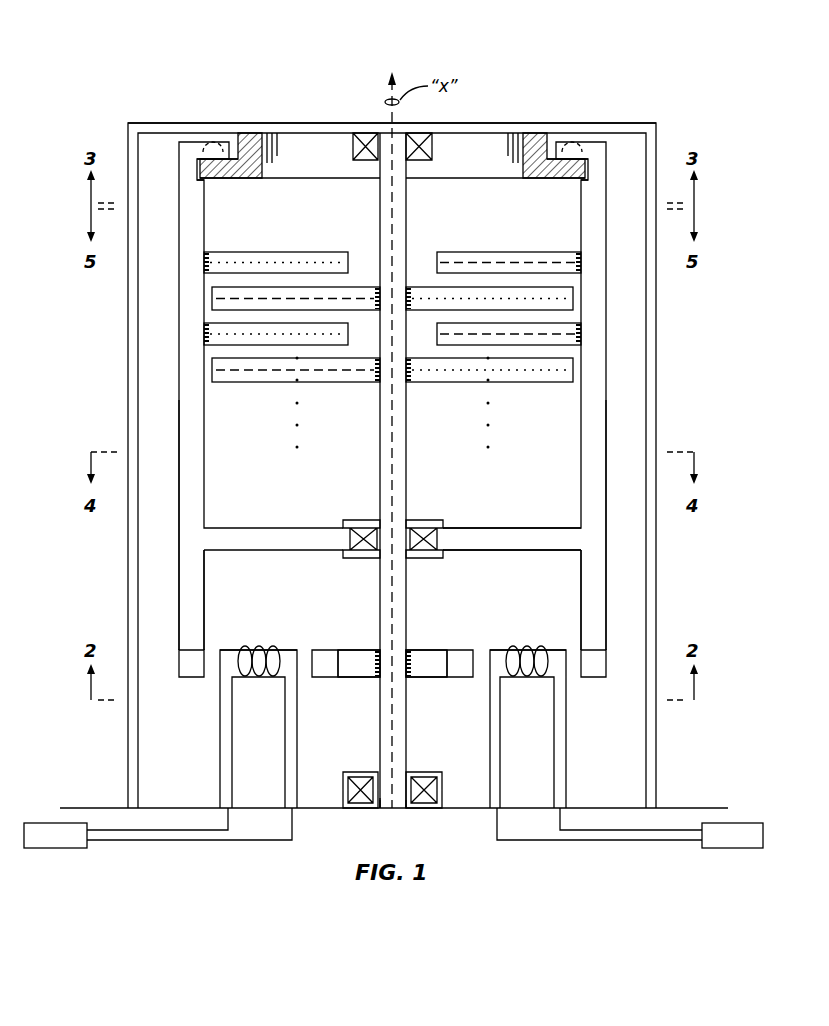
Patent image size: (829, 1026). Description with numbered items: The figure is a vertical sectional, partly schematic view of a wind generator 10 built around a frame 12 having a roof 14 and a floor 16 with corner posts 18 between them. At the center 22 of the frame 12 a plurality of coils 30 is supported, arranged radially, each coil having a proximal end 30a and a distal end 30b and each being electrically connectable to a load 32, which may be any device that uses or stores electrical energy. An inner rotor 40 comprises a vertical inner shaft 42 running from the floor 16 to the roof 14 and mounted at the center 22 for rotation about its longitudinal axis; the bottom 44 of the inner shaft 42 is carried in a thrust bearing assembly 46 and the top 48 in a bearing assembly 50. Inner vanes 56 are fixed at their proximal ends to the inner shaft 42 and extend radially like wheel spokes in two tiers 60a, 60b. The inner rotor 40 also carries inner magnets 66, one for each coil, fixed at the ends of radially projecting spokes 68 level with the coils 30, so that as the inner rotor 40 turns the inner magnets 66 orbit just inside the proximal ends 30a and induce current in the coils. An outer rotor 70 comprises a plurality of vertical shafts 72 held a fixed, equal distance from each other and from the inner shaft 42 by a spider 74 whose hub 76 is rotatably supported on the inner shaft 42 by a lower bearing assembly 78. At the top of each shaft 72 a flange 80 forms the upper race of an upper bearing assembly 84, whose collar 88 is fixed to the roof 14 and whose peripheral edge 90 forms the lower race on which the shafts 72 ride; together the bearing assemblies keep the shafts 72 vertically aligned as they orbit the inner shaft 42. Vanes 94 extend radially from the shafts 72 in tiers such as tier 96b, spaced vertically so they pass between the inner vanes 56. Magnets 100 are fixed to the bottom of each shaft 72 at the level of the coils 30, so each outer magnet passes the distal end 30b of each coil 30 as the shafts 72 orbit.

The wind generator 10 is at (544, 70).
The frame 12 is at (658, 358).
The roof 14 is at (183, 123).
The floor 16 is at (608, 808).
The corner posts 18 is at (131, 388).
The center 22 is at (398, 808).
The coils 30 is at (393, 696).
The proximal end 30a is at (285, 650).
The distal end 30b is at (226, 650).
The load 32 is at (44, 823).
The inner rotor 40 is at (407, 215).
The inner shaft 42 is at (400, 428).
The bottom 44 is at (388, 808).
The thrust bearing assembly 46 is at (425, 772).
The top 48 is at (402, 132).
The bearing assembly 50 is at (364, 135).
The inner vanes 56 is at (229, 384).
The tier 60a is at (418, 286).
The tier 60b is at (366, 384).
The inner magnets 66 is at (331, 678).
The spokes 68 is at (358, 650).
The outer rotor 70 is at (179, 322).
The vertical shafts 72 is at (182, 590).
The spider 74 is at (558, 512).
The hub 76 is at (357, 522).
The lower bearing assembly 78 is at (430, 522).
The flange 80 is at (213, 145).
The upper bearing assembly 84 is at (214, 174).
The collar 88 is at (318, 172).
The peripheral edge 90 is at (208, 180).
The vanes 94 is at (300, 252).
The tier 96b is at (470, 336).
The magnets 100 is at (190, 678).